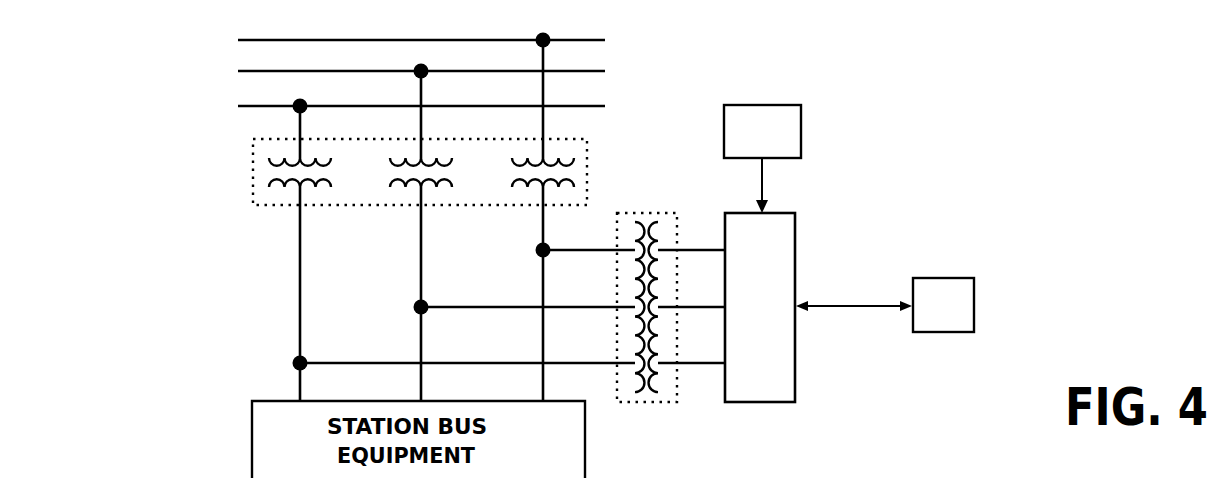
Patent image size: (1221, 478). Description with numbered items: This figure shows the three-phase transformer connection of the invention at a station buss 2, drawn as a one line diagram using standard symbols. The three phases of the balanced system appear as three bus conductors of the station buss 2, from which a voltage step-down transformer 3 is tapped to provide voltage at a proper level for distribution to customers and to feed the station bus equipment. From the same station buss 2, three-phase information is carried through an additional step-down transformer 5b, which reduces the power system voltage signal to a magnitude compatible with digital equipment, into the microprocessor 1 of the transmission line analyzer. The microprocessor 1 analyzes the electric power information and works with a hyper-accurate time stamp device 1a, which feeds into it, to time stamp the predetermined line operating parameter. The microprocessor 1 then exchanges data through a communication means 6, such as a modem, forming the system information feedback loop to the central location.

The microprocessor 1 is at (760, 307).
The hyper-accurate time stamp device 1a is at (762, 159).
The station buss 2 is at (625, 40).
The voltage step-down transformer 3 is at (246, 174).
The additional step-down transformer 5b is at (651, 408).
The communication means 6 is at (885, 305).